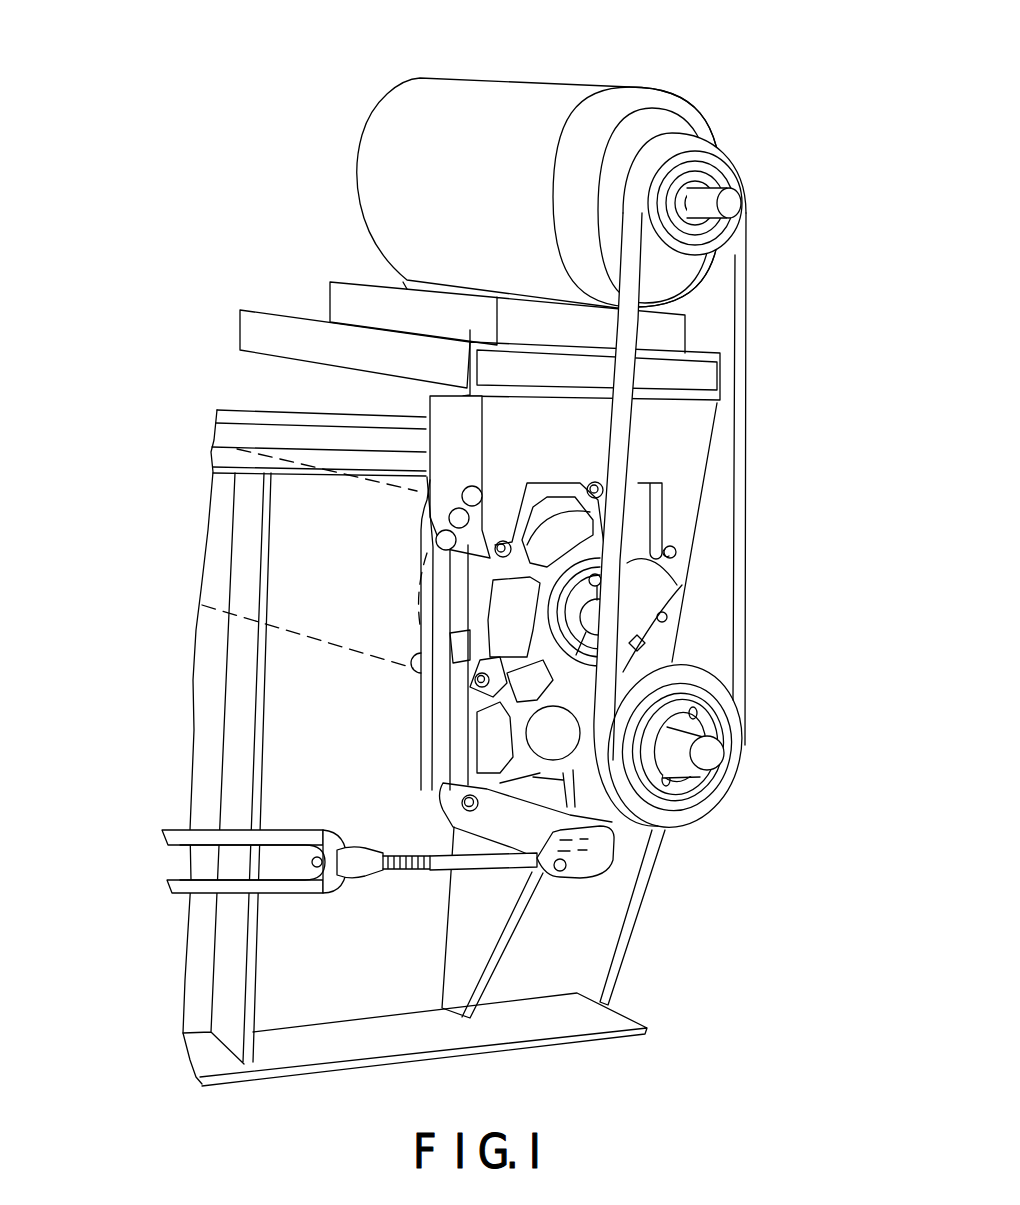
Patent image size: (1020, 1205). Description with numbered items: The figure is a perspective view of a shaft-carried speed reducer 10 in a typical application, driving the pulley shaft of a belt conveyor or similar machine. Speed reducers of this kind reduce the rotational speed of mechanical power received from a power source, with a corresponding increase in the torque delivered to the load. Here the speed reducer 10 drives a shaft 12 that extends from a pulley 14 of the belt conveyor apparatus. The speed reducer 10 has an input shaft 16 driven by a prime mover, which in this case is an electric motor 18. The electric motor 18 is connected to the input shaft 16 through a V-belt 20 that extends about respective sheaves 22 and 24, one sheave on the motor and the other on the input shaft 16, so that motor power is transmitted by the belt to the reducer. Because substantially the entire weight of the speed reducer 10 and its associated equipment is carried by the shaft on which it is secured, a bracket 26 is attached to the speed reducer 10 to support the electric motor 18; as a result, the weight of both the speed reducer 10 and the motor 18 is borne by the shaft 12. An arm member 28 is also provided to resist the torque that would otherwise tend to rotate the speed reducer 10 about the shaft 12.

The shaft-carried speed reducer 10 is at (457, 720).
The shaft 12 is at (640, 610).
The pulley 14 is at (320, 590).
The input shaft 16 is at (713, 758).
The electric motor 18 is at (445, 108).
The V-belt 20 is at (742, 302).
The sheave 22 is at (730, 160).
The sheave 24 is at (693, 807).
The bracket 26 is at (687, 452).
The arm member 28 is at (357, 870).